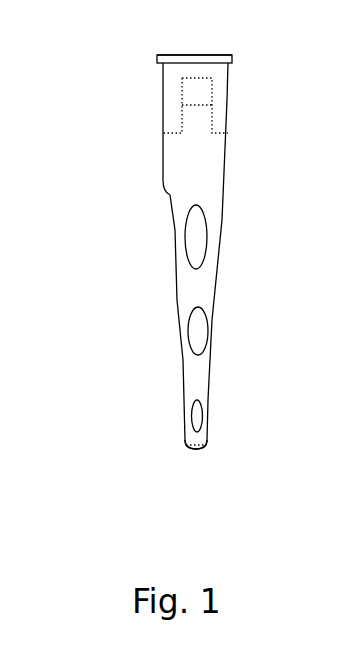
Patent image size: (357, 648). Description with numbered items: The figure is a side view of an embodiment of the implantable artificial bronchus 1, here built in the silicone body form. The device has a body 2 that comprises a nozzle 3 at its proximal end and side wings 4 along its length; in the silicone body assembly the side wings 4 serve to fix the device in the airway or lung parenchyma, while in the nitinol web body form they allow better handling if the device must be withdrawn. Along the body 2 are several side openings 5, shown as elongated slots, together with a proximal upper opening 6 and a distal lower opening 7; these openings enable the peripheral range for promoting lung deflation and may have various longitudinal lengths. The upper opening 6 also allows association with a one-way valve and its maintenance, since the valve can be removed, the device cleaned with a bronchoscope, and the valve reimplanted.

The implantable artificial bronchus 1 is at (98, 121).
The body 2 is at (195, 158).
The nozzle 3 is at (232, 60).
The side wings 4 is at (195, 90).
The side openings 5 is at (185, 377).
The upper opening 6 is at (192, 57).
The lower opening 7 is at (197, 450).